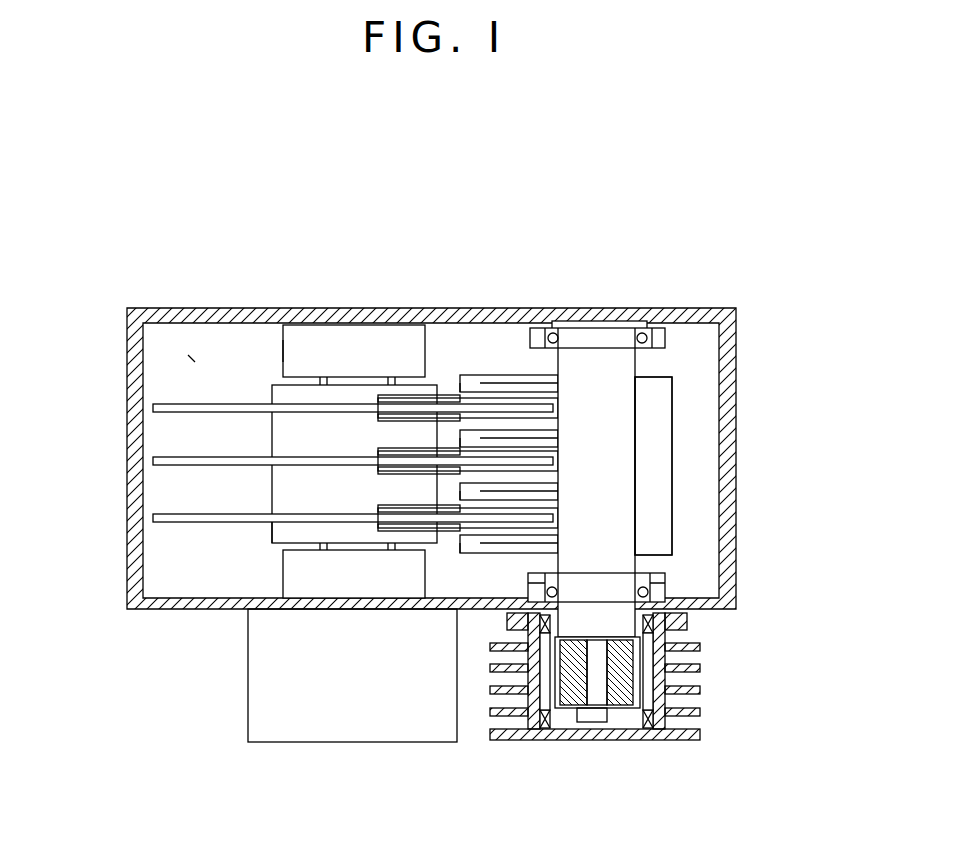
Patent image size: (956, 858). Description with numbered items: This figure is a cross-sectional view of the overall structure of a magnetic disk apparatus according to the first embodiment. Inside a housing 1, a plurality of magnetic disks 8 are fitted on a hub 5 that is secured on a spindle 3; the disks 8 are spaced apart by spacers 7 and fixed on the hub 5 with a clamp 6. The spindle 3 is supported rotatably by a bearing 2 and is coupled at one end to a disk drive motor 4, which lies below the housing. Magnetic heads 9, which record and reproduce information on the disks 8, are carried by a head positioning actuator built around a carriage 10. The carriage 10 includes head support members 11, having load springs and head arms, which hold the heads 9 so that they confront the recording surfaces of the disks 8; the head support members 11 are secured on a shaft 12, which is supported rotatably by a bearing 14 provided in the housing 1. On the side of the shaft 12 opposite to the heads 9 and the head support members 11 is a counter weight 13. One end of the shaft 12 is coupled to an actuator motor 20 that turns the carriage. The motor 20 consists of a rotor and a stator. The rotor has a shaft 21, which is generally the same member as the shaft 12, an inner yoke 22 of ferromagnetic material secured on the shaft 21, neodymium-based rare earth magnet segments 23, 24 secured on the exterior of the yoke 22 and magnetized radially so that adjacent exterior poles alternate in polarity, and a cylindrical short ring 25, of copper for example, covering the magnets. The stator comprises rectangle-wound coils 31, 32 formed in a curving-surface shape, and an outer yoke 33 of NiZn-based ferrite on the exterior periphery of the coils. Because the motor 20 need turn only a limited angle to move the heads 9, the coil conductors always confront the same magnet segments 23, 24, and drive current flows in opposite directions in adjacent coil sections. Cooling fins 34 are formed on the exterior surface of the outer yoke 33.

The housing 1 is at (128, 503).
The bearing 2 is at (317, 345).
The spindle 3 is at (300, 358).
The disk drive motor 4 is at (308, 743).
The hub 5 is at (270, 530).
The clamp 6 is at (283, 402).
The spacers 7 is at (188, 355).
The magnetic disks 8 is at (165, 500).
The magnetic heads 9 is at (383, 510).
The carriage 10 is at (680, 457).
The head support members 11 is at (482, 382).
The shaft 12 is at (592, 367).
The counter weight 13 is at (657, 412).
The bearing 14 is at (553, 330).
The actuator motor 20 is at (712, 690).
The shaft 21 is at (600, 638).
The inner yoke 22 is at (585, 725).
The magnet segment 23 is at (620, 722).
The magnet segment 24 is at (565, 712).
The short ring 25 is at (647, 722).
The coil 31 is at (545, 728).
The coil 32 is at (650, 730).
The outer yoke 33 is at (510, 740).
The cooling fins 34 is at (490, 718).